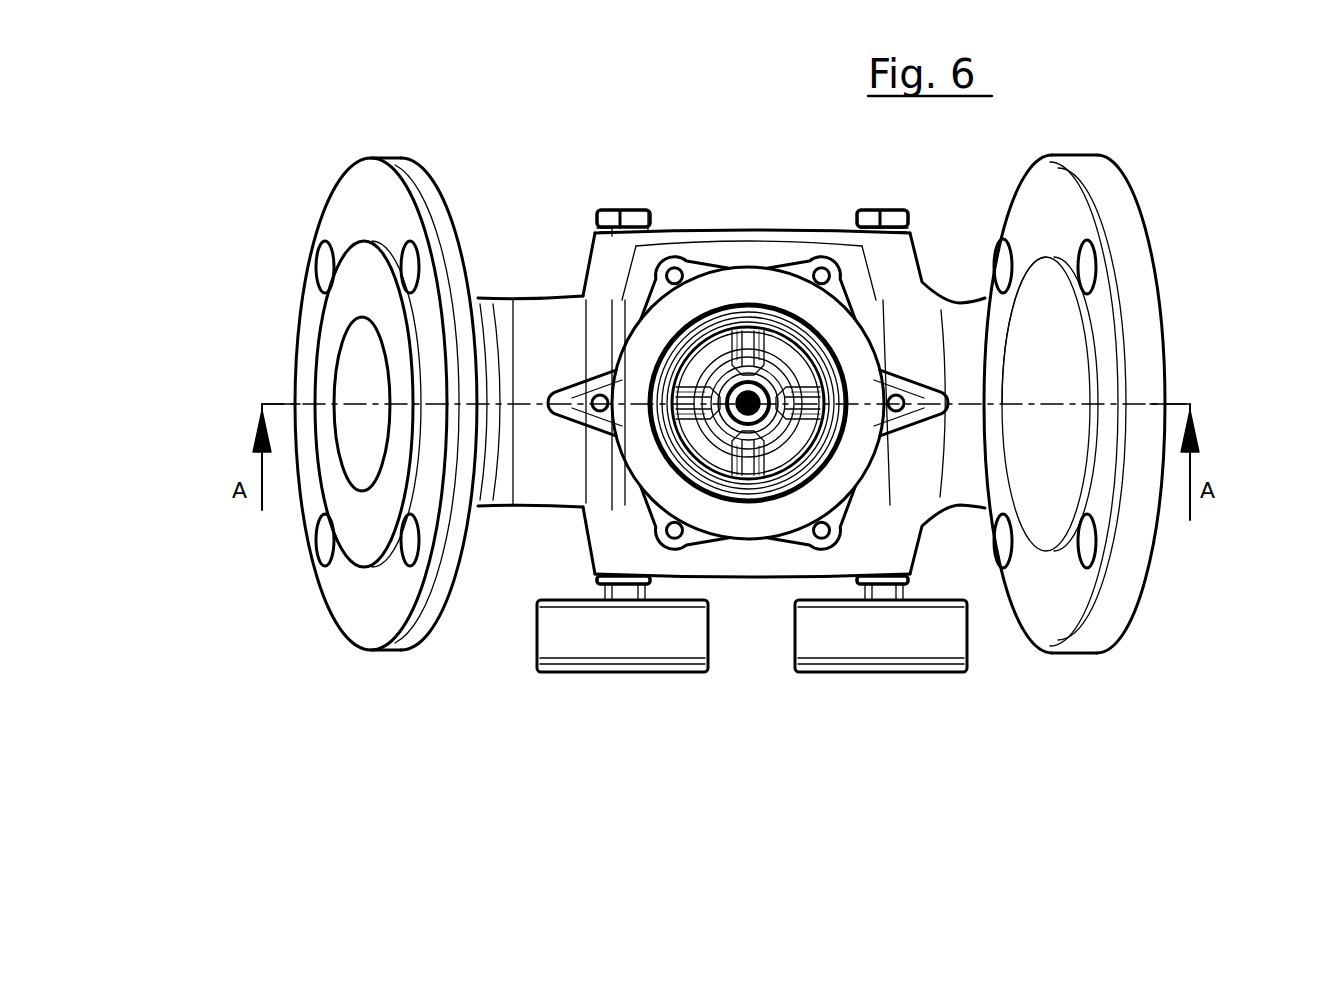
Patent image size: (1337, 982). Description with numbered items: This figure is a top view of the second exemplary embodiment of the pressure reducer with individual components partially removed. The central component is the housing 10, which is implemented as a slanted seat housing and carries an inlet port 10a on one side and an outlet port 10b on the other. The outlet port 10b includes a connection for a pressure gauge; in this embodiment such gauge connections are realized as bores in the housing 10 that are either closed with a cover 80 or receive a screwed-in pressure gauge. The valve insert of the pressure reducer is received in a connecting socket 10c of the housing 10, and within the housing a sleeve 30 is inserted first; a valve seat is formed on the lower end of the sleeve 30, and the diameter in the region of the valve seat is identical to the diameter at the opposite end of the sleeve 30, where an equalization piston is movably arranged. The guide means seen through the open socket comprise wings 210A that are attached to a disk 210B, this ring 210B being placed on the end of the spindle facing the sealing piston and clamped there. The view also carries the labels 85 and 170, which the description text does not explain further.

The housing 10 is at (970, 367).
The inlet port 10a is at (356, 382).
The outlet port 10b is at (1060, 375).
The connecting socket 10c is at (638, 272).
The sleeve 30 is at (978, 535).
The cover 80 is at (880, 209).
The fastening element heads 85 is at (862, 225).
The mounting feet 170 is at (855, 643).
The wings 210A is at (775, 478).
The disk 210B is at (788, 448).